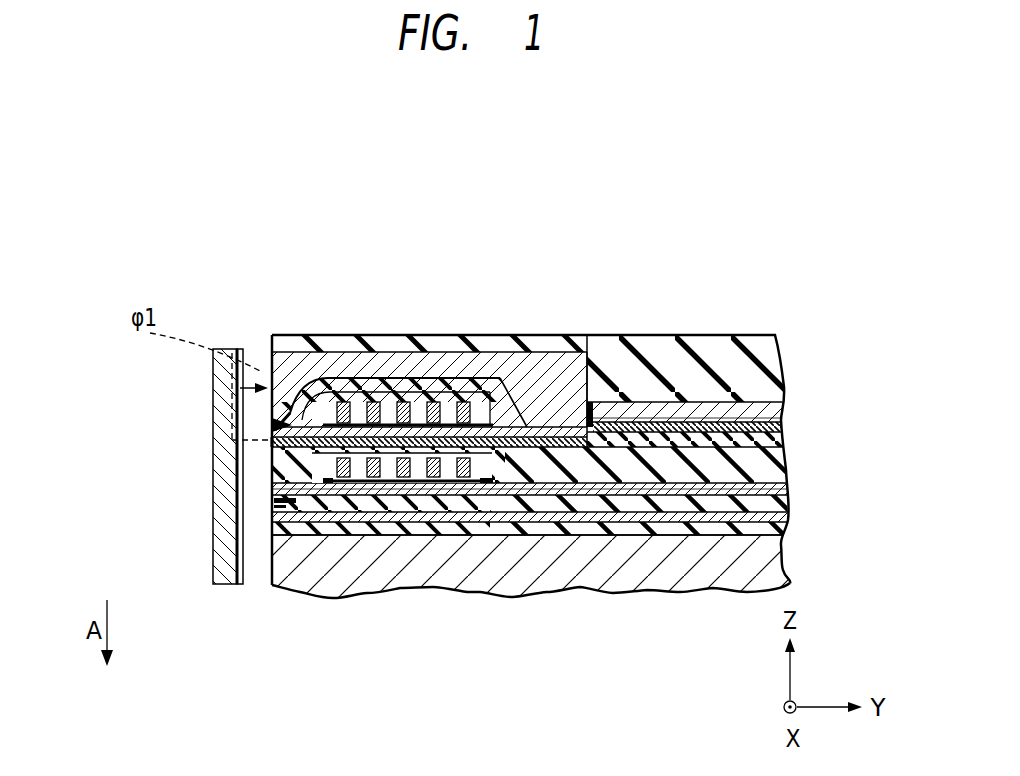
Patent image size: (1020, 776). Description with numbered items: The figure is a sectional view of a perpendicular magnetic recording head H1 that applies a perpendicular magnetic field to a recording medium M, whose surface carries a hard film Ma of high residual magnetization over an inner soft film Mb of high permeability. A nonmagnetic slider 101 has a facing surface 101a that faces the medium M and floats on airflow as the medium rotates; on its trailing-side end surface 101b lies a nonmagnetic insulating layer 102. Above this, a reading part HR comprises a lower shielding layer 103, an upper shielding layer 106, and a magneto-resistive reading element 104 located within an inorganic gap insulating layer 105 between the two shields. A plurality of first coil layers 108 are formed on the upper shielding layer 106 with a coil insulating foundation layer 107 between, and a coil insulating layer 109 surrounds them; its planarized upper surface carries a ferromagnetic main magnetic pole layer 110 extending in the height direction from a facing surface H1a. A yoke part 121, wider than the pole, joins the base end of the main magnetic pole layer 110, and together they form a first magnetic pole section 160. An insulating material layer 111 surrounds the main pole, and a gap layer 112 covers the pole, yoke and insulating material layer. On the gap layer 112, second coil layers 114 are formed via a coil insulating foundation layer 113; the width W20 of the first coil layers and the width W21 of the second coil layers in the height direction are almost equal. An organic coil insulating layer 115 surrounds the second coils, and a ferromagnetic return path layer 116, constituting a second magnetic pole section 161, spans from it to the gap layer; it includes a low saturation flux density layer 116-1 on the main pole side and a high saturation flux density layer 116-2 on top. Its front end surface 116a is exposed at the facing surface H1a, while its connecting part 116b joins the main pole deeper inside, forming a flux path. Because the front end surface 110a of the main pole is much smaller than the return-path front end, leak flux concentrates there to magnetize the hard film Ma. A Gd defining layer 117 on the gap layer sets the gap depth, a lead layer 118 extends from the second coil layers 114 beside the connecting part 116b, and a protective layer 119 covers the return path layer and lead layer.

The slider 101 is at (700, 590).
The facing surface of slider 101a is at (270, 592).
The trailing-side end surface of slider 101b is at (502, 540).
The nonmagnetic insulating layer 102 is at (278, 528).
The lower shielding layer 103 is at (278, 514).
The reading element 104 is at (278, 500).
The inorganic insulating layer (gap insulating layer) 105 is at (622, 502).
The upper shielding layer 106 is at (278, 490).
The coil insulating foundation layer 107 is at (396, 540).
The first coil layers 108 is at (352, 540).
The coil insulating layer 109 is at (278, 470).
The main magnetic pole layer 110 is at (278, 447).
The front end surface of main magnetic pole layer 110a is at (278, 440).
The insulating material layer 111 is at (785, 437).
The gap layer 112 is at (518, 372).
The coil insulating foundation layer 113 is at (490, 400).
The second coil layers 114 is at (428, 362).
The coil insulating layer 115 is at (300, 370).
The return path layer 116 is at (383, 182).
The low saturation magnetic flux density layer 116-1 is at (470, 380).
The high saturation magnetic flux density layer 116-2 is at (505, 376).
The front end surface of return path layer 116a is at (280, 395).
The connecting part of return path layer 116b is at (568, 395).
The Gd defining layer 117 is at (277, 378).
The lead layer 118 is at (615, 410).
The protective layer 119 is at (350, 343).
The yoke part 121 is at (545, 495).
The first magnetic pole section 160 is at (568, 500).
The second magnetic pole section 161 is at (365, 365).
The recording medium M is at (181, 492).
The hard film Ma is at (240, 580).
The soft film Mb is at (215, 560).
The perpendicular magnetic recording head H1 is at (856, 335).
The reading part HR is at (856, 482).
The facing surface H1a is at (278, 383).
The width of second coil layers in height direction W21 is at (278, 443).
The width of first coil layers in height direction W20 is at (333, 530).